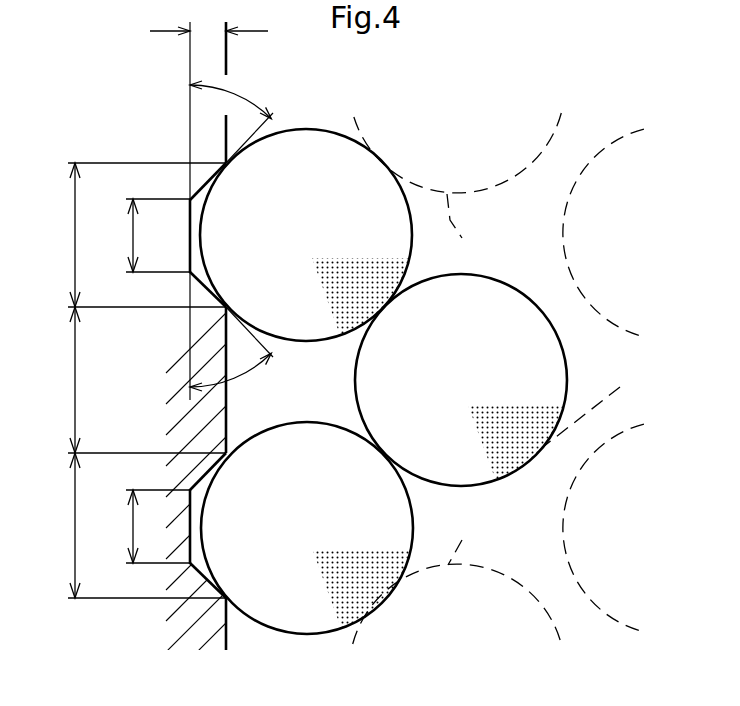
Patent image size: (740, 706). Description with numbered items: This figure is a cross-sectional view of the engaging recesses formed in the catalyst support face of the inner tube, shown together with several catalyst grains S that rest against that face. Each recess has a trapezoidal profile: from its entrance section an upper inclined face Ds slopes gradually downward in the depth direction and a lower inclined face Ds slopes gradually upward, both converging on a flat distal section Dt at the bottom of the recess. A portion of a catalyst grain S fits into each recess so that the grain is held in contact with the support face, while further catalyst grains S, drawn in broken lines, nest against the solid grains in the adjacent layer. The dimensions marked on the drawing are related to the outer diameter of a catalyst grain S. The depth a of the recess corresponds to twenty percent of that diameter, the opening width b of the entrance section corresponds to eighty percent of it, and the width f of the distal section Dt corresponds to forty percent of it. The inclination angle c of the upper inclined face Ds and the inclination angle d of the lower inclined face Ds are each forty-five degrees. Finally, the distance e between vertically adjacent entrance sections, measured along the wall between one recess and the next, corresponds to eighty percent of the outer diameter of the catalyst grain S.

The inclined face Ds is at (200, 187).
The distal section Dt is at (200, 262).
The catalyst grain S is at (412, 233).
The depth of the engaging recess a is at (209, 17).
The opening width of the entrance section b is at (139, 380).
The inclination angle of the upper inclined face c is at (230, 97).
The inclination angle of the lower inclined face d is at (230, 375).
The distance between vertically adjacent entrance sections e is at (66, 380).
The width of the distal section f is at (152, 381).